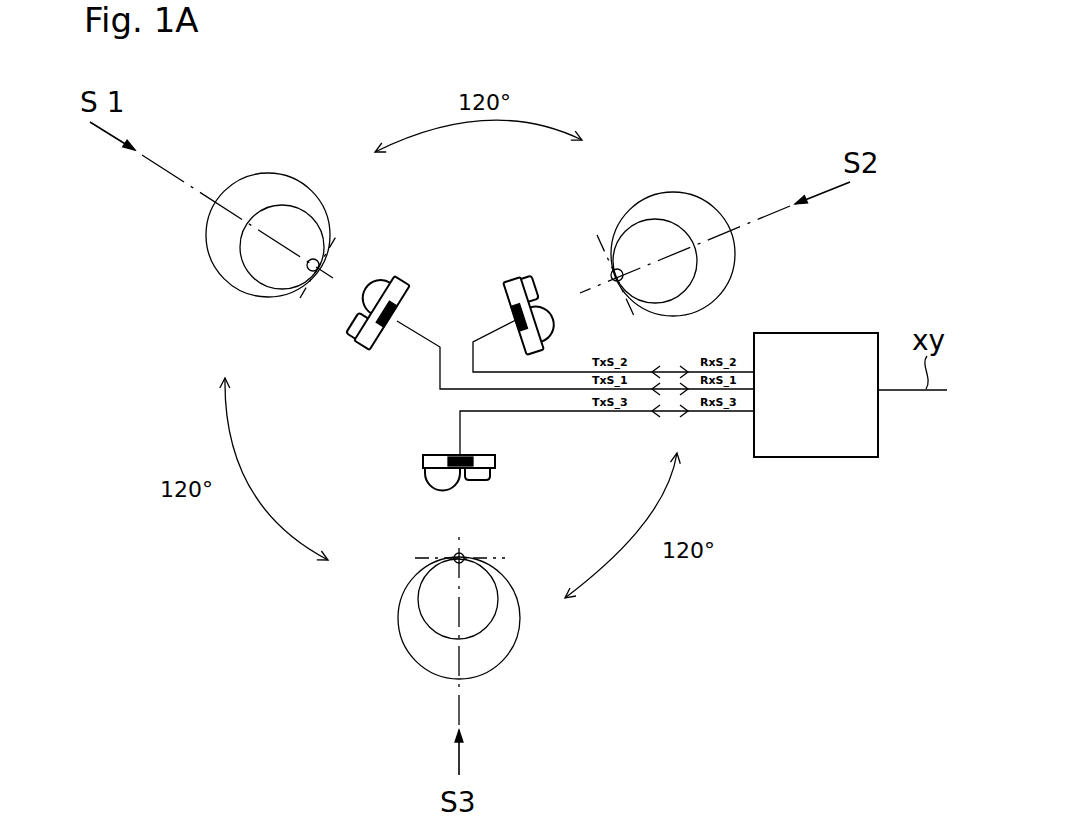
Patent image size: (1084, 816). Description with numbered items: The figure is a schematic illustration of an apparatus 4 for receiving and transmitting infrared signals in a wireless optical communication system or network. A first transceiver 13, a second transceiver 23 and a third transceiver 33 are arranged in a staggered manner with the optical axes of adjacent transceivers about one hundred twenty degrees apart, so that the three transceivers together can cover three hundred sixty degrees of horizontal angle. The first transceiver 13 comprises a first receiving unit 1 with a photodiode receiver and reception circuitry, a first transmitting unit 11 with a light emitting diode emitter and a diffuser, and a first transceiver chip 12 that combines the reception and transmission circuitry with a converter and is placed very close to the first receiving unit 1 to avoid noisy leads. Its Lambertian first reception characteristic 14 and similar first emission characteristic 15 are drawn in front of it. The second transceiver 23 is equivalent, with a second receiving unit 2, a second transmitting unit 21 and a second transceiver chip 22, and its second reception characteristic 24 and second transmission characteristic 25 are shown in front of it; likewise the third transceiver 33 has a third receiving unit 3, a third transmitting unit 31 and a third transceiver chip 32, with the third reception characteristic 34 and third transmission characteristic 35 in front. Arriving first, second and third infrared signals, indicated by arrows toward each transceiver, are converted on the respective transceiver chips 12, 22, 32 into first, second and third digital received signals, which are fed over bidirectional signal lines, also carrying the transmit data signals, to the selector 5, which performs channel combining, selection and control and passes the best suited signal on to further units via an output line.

The first receiving unit 1 is at (354, 321).
The second receiving unit 2 is at (514, 266).
The third receiving unit 3 is at (480, 483).
The apparatus 4 is at (715, 703).
The selector 5 is at (818, 458).
The first transmitting unit 11 is at (379, 282).
The first transceiver chip 12 is at (397, 324).
The first transceiver 13 is at (529, 293).
The first reception characteristic 14 is at (205, 233).
The first emission characteristic 15 is at (243, 279).
The second transmitting unit 21 is at (566, 323).
The second transceiver chip 22 is at (514, 313).
The second transceiver 23 is at (605, 283).
The second reception characteristic 24 is at (736, 247).
The second transmission characteristic 25 is at (698, 285).
The third transmitting unit 31 is at (428, 488).
The third transceiver chip 32 is at (455, 455).
The third transceiver 33 is at (571, 476).
The third reception characteristic 34 is at (490, 674).
The third transmission characteristic 35 is at (494, 621).